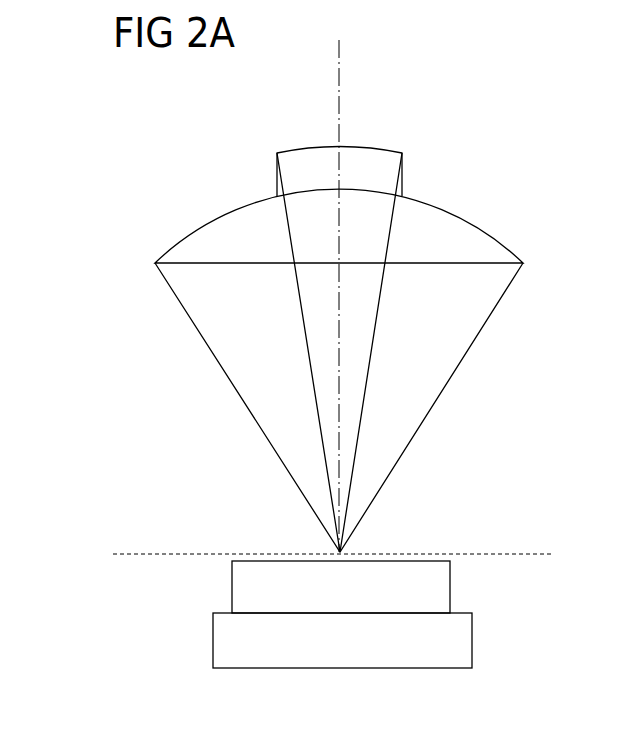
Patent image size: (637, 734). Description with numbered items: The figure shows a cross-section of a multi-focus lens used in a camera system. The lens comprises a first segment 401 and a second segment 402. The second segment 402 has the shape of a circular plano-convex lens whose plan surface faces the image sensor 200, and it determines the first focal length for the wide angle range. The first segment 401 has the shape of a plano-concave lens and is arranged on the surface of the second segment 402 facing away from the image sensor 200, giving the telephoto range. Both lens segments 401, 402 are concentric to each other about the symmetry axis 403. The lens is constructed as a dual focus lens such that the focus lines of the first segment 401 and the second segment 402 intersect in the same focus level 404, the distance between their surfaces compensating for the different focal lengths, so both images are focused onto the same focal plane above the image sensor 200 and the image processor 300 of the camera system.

The image sensor 200 is at (232, 585).
The image processor 300 is at (213, 638).
The first segment 401 is at (402, 153).
The second segment 402 is at (222, 208).
The symmetry axis 403 is at (339, 90).
The focus level 404 is at (508, 553).